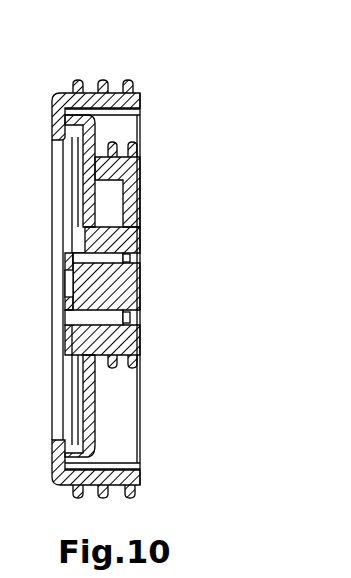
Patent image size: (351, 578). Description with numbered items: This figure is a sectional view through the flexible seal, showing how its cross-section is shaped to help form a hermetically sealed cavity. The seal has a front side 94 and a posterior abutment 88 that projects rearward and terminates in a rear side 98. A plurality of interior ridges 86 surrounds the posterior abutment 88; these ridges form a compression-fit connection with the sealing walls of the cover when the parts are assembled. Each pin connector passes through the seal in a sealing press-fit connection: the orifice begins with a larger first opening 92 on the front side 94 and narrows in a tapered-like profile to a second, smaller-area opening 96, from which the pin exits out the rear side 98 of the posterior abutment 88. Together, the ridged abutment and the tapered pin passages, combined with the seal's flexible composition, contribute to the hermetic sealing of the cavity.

The interior ridges 86 is at (132, 368).
The posterior abutment 88 is at (125, 340).
The first opening 92 is at (63, 320).
The front side 94 is at (52, 182).
The second opening 96 is at (130, 318).
The rear side 98 is at (140, 113).